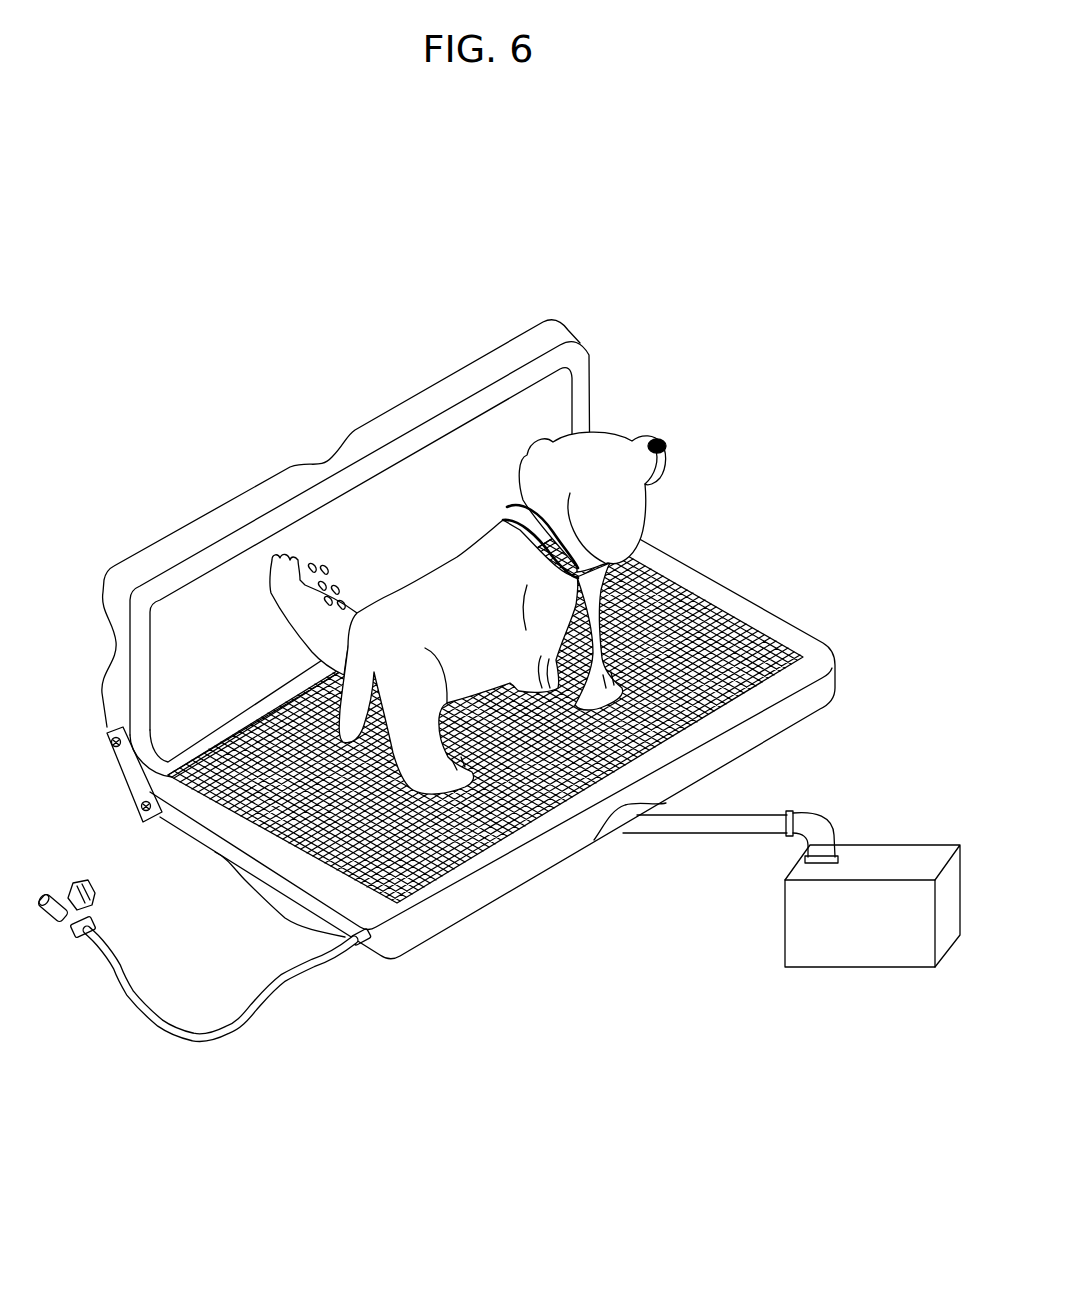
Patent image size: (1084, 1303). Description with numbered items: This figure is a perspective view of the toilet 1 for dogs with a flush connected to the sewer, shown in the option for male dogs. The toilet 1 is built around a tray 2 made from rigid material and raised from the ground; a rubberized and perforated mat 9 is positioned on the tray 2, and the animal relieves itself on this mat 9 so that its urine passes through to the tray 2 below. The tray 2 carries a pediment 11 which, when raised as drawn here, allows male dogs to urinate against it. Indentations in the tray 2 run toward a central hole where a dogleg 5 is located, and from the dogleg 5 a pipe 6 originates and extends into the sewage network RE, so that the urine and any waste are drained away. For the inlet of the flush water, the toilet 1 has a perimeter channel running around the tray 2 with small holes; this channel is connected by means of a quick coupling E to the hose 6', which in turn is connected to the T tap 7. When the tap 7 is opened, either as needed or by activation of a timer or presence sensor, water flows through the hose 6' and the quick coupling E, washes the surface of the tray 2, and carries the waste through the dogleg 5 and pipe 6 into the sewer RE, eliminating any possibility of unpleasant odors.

The toilet 1 is at (226, 237).
The pediment 11 is at (558, 333).
The tray 2 is at (437, 933).
The mat 9 is at (740, 620).
The pipe 6 is at (705, 882).
The dogleg 5 is at (817, 823).
The sewage network RE is at (821, 963).
The quick coupling E is at (366, 941).
The hose 6' is at (220, 1056).
The T tap 7 is at (67, 905).